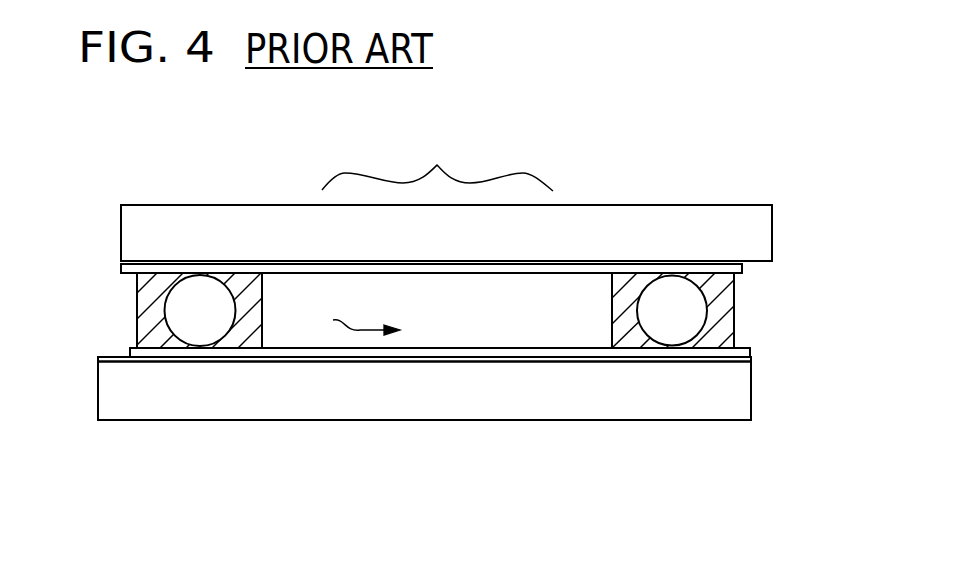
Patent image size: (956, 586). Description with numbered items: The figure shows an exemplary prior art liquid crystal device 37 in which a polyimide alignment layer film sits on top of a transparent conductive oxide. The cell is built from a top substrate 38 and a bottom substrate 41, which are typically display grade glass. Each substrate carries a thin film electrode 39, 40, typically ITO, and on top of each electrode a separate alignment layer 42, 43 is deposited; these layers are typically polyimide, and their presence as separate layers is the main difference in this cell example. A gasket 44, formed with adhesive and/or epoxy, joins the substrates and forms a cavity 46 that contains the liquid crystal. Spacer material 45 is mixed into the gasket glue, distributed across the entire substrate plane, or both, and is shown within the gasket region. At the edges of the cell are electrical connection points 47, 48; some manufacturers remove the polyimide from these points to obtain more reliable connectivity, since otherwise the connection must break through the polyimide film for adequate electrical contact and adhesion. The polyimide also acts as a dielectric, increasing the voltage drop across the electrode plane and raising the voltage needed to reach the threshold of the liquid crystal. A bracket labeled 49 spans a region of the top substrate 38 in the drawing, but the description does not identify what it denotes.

The liquid crystal device 37 is at (616, 92).
The top substrate 38 is at (121, 234).
The thin film electrode 39 is at (121, 265).
The thin film electrode 40 is at (98, 358).
The bottom substrate 41 is at (98, 392).
The alignment layer 42 is at (751, 351).
The alignment layer 43 is at (742, 271).
The gasket 44 is at (734, 324).
The spacer material 45 is at (637, 316).
The cavity 46 is at (346, 325).
The electrical connection point 47 is at (107, 355).
The electrical connection point 48 is at (773, 262).
The region of top plate 49 is at (437, 160).